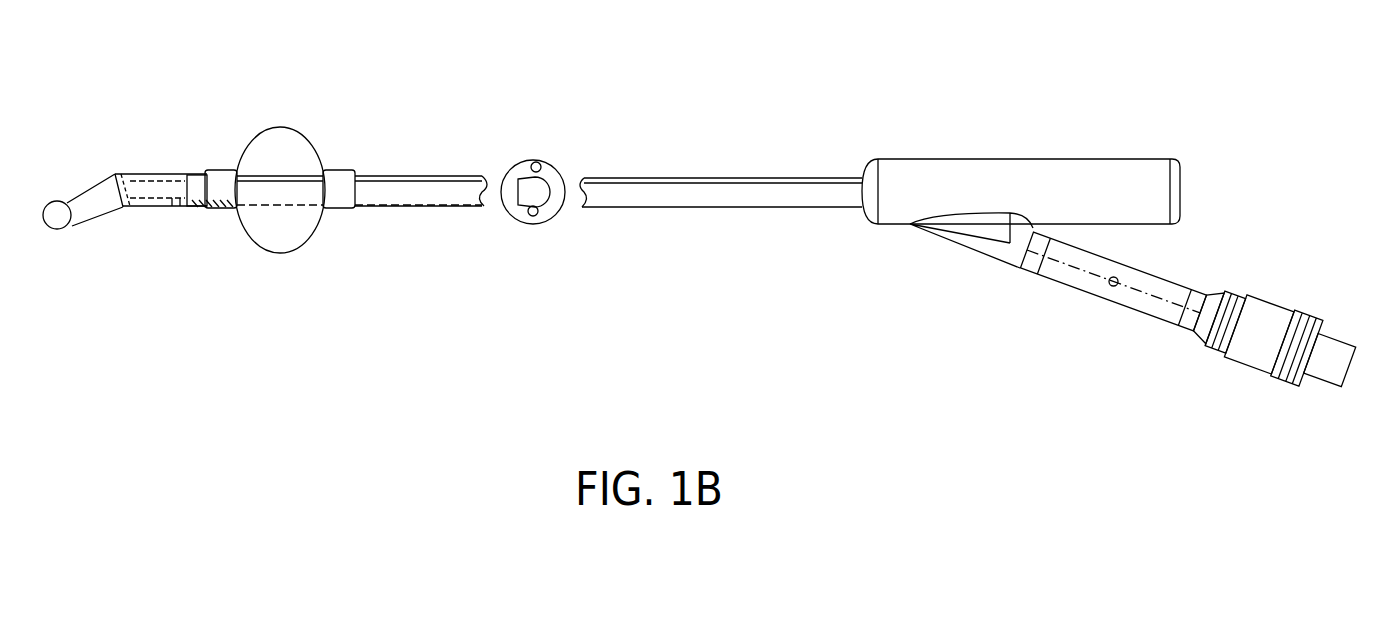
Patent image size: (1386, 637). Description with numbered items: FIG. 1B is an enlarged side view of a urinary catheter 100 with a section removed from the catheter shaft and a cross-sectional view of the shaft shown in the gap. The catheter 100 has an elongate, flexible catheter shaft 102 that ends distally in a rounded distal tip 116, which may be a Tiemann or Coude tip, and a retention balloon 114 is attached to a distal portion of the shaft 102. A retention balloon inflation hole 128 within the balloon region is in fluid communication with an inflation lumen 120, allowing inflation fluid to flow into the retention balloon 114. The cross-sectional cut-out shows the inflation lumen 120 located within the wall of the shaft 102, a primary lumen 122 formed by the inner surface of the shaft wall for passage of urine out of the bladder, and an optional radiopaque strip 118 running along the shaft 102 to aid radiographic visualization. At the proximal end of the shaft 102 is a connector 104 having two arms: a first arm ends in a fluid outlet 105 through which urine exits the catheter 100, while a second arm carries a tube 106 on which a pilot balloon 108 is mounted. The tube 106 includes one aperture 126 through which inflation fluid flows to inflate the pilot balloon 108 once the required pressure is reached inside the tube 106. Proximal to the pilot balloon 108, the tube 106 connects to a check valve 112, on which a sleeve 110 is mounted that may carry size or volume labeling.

The urinary catheter 100 is at (573, 68).
The catheter shaft 102 is at (516, 215).
The connector 104 is at (963, 159).
The fluid outlet 105 is at (1182, 172).
The tube 106 is at (1065, 284).
The pilot balloon 108 is at (1140, 270).
The sleeve 110 is at (1275, 300).
The check valve 112 is at (1338, 342).
The retention balloon 114 is at (267, 128).
The distal tip 116 is at (62, 203).
The radiopaque strip 118 is at (541, 166).
The inflation lumen 120 is at (541, 211).
The primary lumen 122 is at (530, 182).
The aperture 126 is at (1116, 287).
The retention balloon inflation hole 128 is at (272, 203).